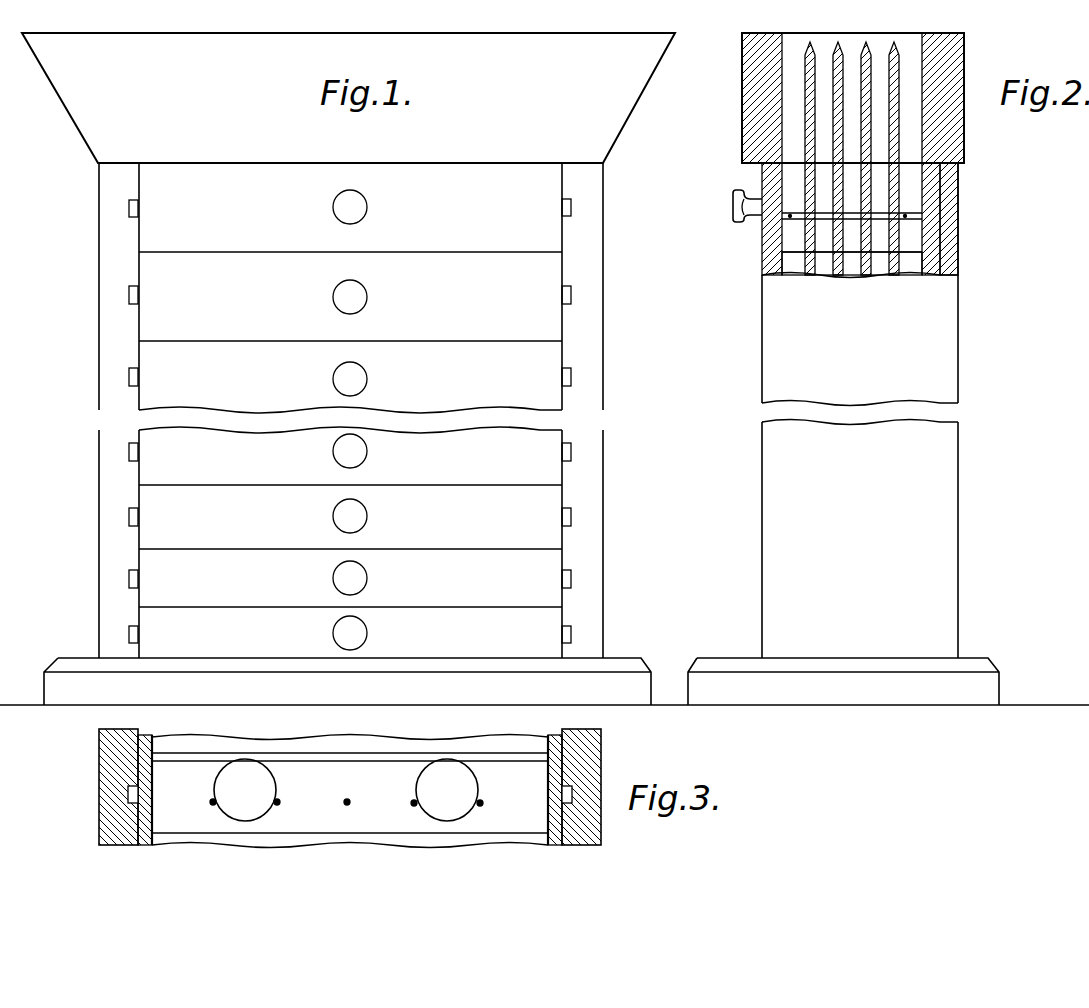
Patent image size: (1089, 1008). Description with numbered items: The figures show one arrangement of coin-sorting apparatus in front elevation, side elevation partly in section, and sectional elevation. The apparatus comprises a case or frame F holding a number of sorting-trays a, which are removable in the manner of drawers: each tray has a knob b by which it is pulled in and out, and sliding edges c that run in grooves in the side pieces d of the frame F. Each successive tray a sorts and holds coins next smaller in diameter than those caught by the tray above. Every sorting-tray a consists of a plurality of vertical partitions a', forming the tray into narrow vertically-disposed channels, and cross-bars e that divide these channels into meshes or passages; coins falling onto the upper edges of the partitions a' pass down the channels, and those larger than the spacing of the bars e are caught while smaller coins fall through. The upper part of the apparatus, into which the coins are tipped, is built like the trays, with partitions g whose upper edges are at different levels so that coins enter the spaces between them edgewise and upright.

In FIG. 1, the case or frame F is at (348, 369).
In FIG. 2, the case or frame F is at (853, 422).
In FIG. 1, the sorting-tray a is at (350, 406).
In FIG. 2, the sorting-tray a is at (856, 220).
In FIG. 3, the sorting-tray a is at (350, 791).
In FIG. 2, the vertical partitions a' is at (853, 199).
In FIG. 3, the vertical partitions a' is at (350, 738).
In FIG. 1, the knob b is at (338, 213).
In FIG. 2, the knob b is at (734, 205).
In FIG. 3, the knob b is at (346, 790).
In FIG. 1, the sliding edges c is at (133, 209).
In FIG. 3, the sliding edges c is at (128, 795).
In FIG. 1, the side pieces d is at (101, 335).
In FIG. 2, the side pieces d is at (853, 345).
In FIG. 3, the side pieces d is at (99, 745).
In FIG. 2, the cross-bars e is at (790, 218).
In FIG. 3, the cross-bars e is at (213, 802).
In FIG. 2, the partitions g is at (872, 70).